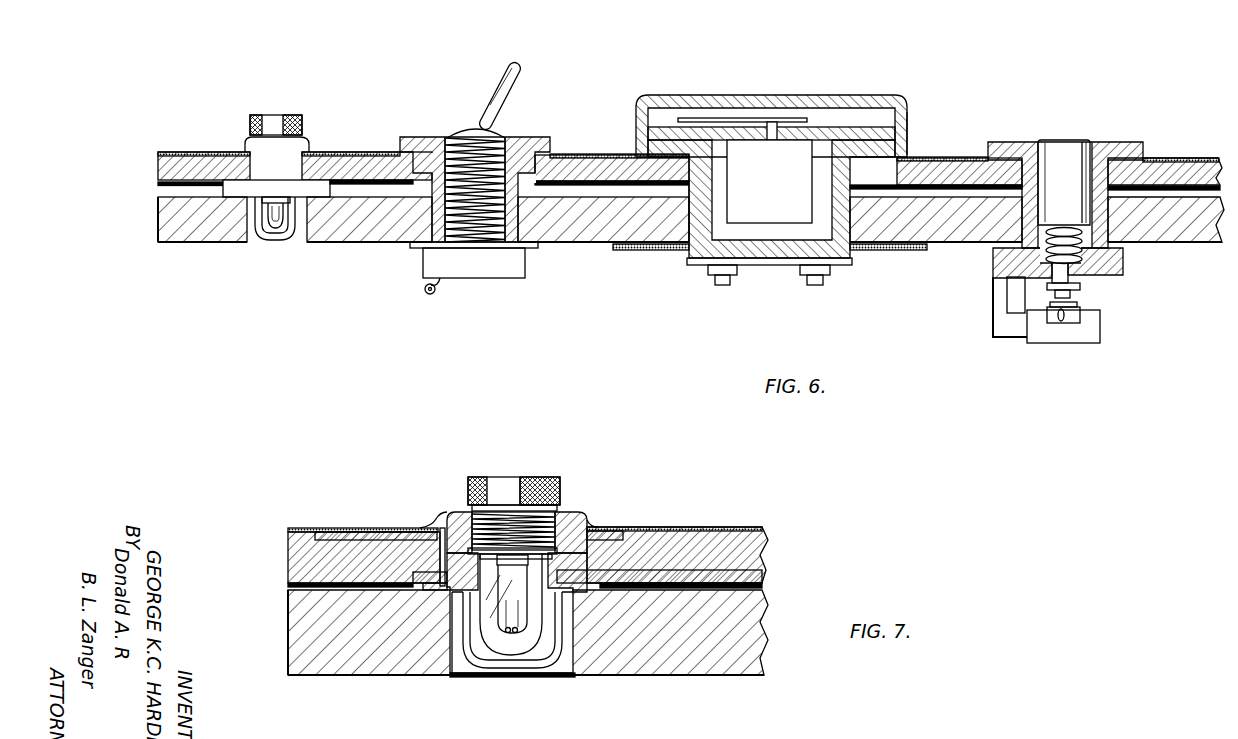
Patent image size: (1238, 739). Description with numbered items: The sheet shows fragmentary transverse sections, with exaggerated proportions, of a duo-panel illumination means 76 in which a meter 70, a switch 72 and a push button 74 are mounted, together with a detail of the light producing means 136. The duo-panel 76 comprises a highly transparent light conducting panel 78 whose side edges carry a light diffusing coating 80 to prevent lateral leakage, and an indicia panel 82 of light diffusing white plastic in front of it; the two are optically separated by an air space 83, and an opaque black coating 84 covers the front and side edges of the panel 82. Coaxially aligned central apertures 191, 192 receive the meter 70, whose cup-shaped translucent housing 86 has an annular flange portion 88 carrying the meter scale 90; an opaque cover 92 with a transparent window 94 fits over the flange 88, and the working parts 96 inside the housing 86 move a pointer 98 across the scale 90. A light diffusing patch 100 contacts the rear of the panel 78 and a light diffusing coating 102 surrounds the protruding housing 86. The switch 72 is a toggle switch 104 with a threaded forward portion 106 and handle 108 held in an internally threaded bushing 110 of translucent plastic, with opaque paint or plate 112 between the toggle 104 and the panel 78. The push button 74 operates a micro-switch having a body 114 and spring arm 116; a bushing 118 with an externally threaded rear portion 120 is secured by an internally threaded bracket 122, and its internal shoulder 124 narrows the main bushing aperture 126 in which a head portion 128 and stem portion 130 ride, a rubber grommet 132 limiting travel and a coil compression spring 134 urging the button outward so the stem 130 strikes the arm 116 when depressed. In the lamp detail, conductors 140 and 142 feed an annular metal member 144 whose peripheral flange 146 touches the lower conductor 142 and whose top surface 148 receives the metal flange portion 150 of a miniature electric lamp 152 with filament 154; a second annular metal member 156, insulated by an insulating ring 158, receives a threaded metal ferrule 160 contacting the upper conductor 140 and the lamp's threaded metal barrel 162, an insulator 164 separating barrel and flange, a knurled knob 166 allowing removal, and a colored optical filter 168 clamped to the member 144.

In FIG. 6, the meter 70 is at (814, 87).
In FIG. 6, the switch 72 is at (522, 110).
In FIG. 6, the push button 74 is at (1068, 110).
In FIG. 6, the duo-panel illumination means 76 is at (150, 143).
In FIG. 6, the light conducting panel 78 is at (180, 245).
In FIG. 7, the light conducting panel 78 is at (325, 672).
In FIG. 6, the light diffusing coating 80 is at (158, 220).
In FIG. 7, the light diffusing coating 80 is at (290, 615).
In FIG. 6, the indicia panel 82 is at (200, 158).
In FIG. 7, the indicia panel 82 is at (290, 552).
In FIG. 6, the air space 83 is at (158, 185).
In FIG. 7, the air space 83 is at (290, 584).
In FIG. 6, the opaque coating 84 is at (345, 158).
In FIG. 7, the opaque coating 84 is at (312, 528).
In FIG. 6, the cup-shaped translucent housing 86 is at (689, 254).
In FIG. 6, the annular flange portion 88 is at (905, 150).
In FIG. 6, the meter scale 90 is at (842, 126).
In FIG. 6, the opaque cover 92 is at (907, 110).
In FIG. 6, the transparent window 94 is at (708, 96).
In FIG. 6, the working parts of the meter 96 is at (774, 184).
In FIG. 6, the pointer 98 is at (728, 118).
In FIG. 6, the light diffusing patch 100 is at (640, 251).
In FIG. 6, the light diffusing coating 102 is at (853, 262).
In FIG. 6, the toggle switch 104 is at (480, 278).
In FIG. 6, the threaded forward portion 106 is at (500, 226).
In FIG. 6, the handle 108 is at (502, 72).
In FIG. 6, the internally threaded bushing 110 is at (535, 138).
In FIG. 6, the opaque paint or plate 112 is at (412, 248).
In FIG. 6, the micro-switch body 114 is at (1054, 345).
In FIG. 6, the spring arm 116 is at (1080, 317).
In FIG. 6, the bushing 118 is at (1135, 150).
In FIG. 6, the extended rear portion 120 is at (1100, 282).
In FIG. 6, the internally threaded bracket 122 is at (992, 300).
In FIG. 6, the internal shoulder 124 is at (1005, 284).
In FIG. 6, the main bushing aperture 126 is at (1045, 140).
In FIG. 6, the head portion 128 is at (1087, 140).
In FIG. 6, the stem portion 130 is at (1110, 278).
In FIG. 6, the rubber grommet 132 is at (1052, 290).
In FIG. 6, the coil compression spring 134 is at (1045, 252).
In FIG. 6, the light producing means 136 is at (290, 108).
In FIG. 7, the light producing means 136 is at (518, 470).
In FIG. 7, the upper conductor 140 is at (370, 528).
In FIG. 7, the lower conductor 142 is at (760, 580).
In FIG. 7, the annular metal member 144 is at (463, 596).
In FIG. 7, the peripheral flange 146 is at (440, 588).
In FIG. 7, the top surface 148 is at (585, 583).
In FIG. 7, the metal flange portion 150 is at (452, 562).
In FIG. 7, the miniature electric lamp 152 is at (495, 640).
In FIG. 7, the lamp filament 154 is at (520, 640).
In FIG. 7, the second annular metal member 156 is at (462, 514).
In FIG. 7, the insulating ring 158 is at (441, 528).
In FIG. 7, the threaded metal ferrule 160 is at (443, 520).
In FIG. 7, the threaded metal barrel 162 is at (500, 520).
In FIG. 7, the insulator 164 is at (558, 525).
In FIG. 7, the knurled knob 166 is at (545, 477).
In FIG. 7, the colored optical filter 168 is at (560, 668).
In FIG. 6, the central aperture 191 is at (660, 252).
In FIG. 6, the central aperture 192 is at (850, 266).